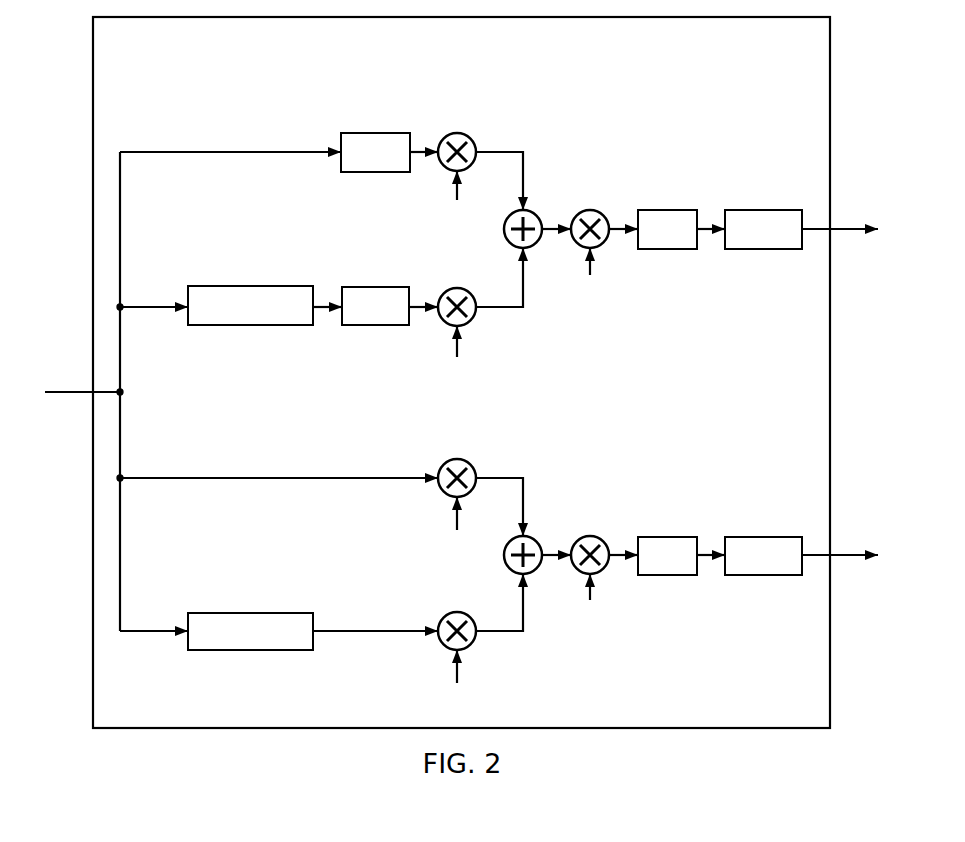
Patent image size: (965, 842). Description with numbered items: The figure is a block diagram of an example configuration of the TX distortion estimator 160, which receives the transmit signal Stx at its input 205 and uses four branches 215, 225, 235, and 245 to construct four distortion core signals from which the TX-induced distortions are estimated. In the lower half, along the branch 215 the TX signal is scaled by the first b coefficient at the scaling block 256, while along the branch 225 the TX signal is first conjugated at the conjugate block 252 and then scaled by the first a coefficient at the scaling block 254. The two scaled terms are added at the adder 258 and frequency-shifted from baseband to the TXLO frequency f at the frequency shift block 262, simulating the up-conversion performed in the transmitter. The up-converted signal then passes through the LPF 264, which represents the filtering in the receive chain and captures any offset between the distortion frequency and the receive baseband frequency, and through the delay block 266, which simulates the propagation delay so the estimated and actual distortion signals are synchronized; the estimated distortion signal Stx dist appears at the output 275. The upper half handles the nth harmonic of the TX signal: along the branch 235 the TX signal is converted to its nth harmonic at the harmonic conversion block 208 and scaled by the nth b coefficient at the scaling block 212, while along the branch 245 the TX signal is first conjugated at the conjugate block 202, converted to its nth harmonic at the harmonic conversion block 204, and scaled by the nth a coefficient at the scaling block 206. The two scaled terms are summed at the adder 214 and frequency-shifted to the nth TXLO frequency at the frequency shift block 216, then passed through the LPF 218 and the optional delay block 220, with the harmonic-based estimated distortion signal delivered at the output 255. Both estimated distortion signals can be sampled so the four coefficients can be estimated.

The TX distortion estimator 160 is at (461, 372).
The conjugate block 202 is at (250, 284).
The nth harmonic conversion block 204 is at (375, 285).
The transmit signal Stx input 205 is at (73, 390).
The scaling block 206 is at (450, 289).
The nth harmonic conversion block 208 is at (375, 132).
The scaling block 212 is at (452, 133).
The adder 214 is at (538, 213).
The branch 215 is at (252, 482).
The frequency shift block 216 is at (600, 208).
The LPF 218 is at (668, 208).
The delay block 220 is at (763, 208).
The branch 225 is at (159, 634).
The branch 235 is at (250, 148).
The branch 245 is at (159, 304).
The conjugate block 252 is at (252, 652).
The scaling block 254 is at (450, 613).
The output 255 is at (850, 225).
The scaling block 256 is at (450, 460).
The adder 258 is at (538, 538).
The frequency shift block 262 is at (600, 535).
The LPF 264 is at (668, 577).
The delay block 266 is at (763, 577).
The output 275 is at (850, 557).